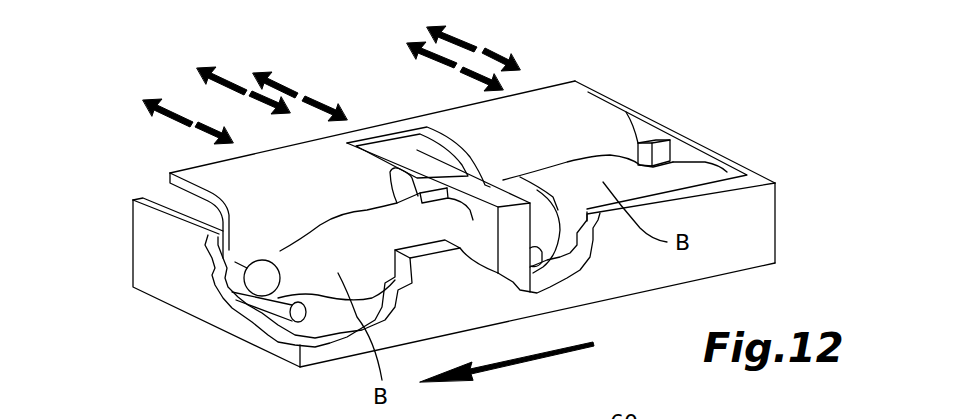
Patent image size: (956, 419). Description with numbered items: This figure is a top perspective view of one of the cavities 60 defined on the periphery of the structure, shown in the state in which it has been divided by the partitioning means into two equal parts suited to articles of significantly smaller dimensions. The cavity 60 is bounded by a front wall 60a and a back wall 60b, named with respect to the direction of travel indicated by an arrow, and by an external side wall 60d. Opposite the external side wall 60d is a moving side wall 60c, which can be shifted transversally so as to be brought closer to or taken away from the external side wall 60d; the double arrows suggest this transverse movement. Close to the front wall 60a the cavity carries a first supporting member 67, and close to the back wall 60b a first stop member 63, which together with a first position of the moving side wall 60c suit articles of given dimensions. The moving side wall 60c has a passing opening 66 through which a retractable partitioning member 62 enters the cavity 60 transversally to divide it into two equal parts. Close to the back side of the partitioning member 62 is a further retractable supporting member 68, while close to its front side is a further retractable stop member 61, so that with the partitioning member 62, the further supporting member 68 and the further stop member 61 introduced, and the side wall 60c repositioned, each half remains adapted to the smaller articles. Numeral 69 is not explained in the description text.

The cavity 60 is at (640, 95).
The front wall 60a is at (163, 280).
The back wall 60b is at (700, 147).
The moving side wall 60c is at (197, 167).
The external side wall 60d is at (720, 260).
The further retractable stop member 61 is at (413, 178).
The retractable partitioning member 62 is at (482, 187).
The first stop member 63 is at (645, 135).
The passing opening 66 is at (425, 143).
The first supporting member 67 is at (275, 310).
The further retractable supporting member 68 is at (538, 265).
The serpentine spring 69 is at (300, 370).